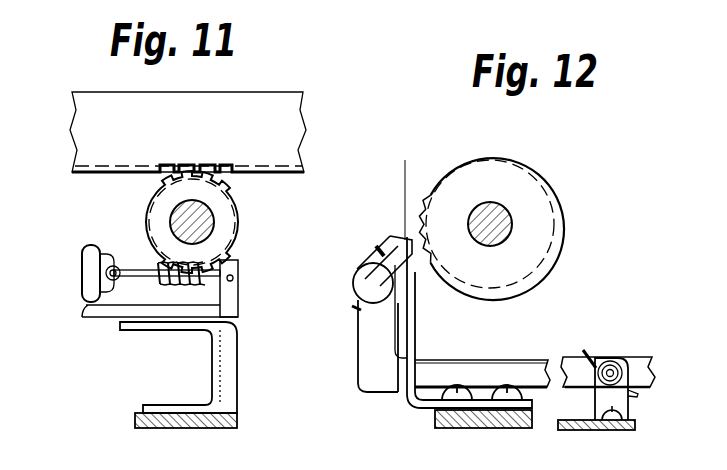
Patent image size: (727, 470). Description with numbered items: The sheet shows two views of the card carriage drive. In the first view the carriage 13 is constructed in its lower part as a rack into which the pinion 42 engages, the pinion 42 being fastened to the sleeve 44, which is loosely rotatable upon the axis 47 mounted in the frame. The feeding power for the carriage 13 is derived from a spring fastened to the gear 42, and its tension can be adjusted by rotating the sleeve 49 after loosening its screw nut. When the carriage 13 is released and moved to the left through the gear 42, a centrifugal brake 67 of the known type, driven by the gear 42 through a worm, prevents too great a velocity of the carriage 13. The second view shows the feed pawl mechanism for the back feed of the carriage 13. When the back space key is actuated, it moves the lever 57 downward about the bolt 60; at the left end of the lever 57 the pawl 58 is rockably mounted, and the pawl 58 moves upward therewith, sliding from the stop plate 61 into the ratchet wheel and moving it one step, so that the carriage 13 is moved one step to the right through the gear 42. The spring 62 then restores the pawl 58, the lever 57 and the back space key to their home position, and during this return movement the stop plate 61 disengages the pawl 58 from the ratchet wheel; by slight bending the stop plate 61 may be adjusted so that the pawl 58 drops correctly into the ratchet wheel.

In FIG. 11, the carriage 13 is at (258, 134).
In FIG. 11, the pinion 42 is at (222, 234).
In FIG. 11, the axis 47 is at (183, 209).
In FIG. 12, the axis 47 is at (498, 222).
In FIG. 11, the centrifugal brake 67 is at (88, 266).
In FIG. 12, the sleeve 44 is at (512, 190).
In FIG. 12, the stop plate 61 is at (408, 187).
In FIG. 12, the pawl 58 is at (380, 246).
In FIG. 12, the sleeve 49 is at (356, 308).
In FIG. 12, the lever 57 is at (371, 358).
In FIG. 12, the bolt 60 is at (620, 357).
In FIG. 12, the spring 62 is at (591, 352).